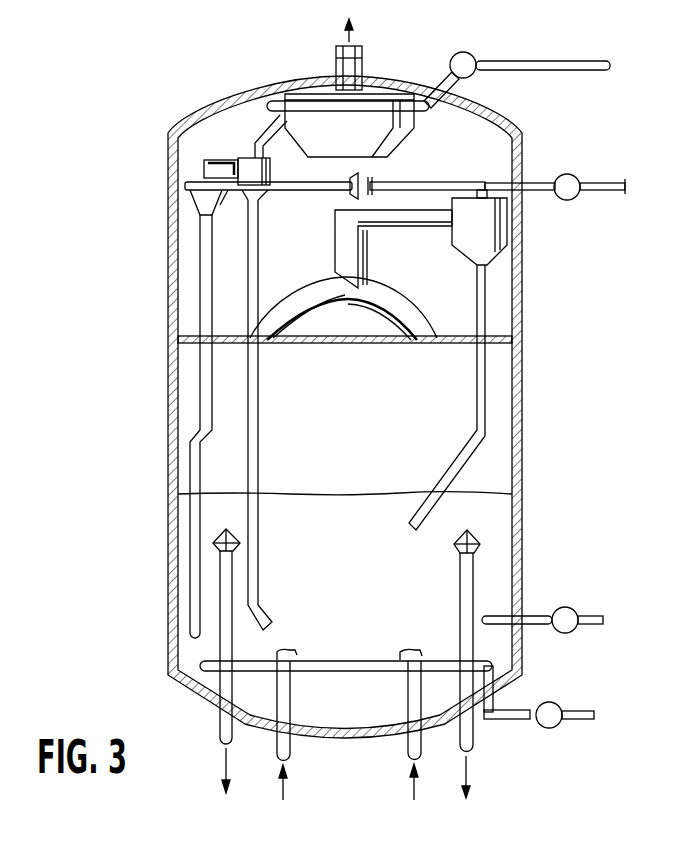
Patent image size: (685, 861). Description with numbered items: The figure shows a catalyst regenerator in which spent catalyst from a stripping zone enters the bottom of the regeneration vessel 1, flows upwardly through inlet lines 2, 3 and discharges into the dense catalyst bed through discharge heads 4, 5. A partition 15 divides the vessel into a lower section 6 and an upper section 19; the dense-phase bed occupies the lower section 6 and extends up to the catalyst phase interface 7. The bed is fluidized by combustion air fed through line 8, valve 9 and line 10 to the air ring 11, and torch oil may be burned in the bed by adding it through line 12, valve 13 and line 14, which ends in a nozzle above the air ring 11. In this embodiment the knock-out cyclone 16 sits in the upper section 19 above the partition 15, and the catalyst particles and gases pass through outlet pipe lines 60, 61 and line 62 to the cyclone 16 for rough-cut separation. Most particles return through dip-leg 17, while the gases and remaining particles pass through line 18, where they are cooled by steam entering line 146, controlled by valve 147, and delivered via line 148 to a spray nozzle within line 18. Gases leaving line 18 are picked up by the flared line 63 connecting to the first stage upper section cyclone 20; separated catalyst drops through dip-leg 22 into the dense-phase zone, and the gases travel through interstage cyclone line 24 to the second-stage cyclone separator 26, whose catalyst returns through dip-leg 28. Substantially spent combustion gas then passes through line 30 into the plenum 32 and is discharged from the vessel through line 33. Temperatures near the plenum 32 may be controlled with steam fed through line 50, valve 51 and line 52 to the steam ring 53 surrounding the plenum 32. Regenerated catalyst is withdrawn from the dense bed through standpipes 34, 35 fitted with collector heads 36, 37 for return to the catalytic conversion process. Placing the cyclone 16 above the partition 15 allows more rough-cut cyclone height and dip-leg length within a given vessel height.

The regeneration vessel 1 is at (162, 240).
The inlet line 2 is at (278, 696).
The inlet line 3 is at (408, 696).
The discharge head 4 is at (290, 654).
The discharge head 5 is at (402, 654).
The lower section 6 is at (403, 593).
The catalyst phase interface 7 is at (370, 492).
The line 8 is at (585, 711).
The valve 9 is at (552, 702).
The line 10 is at (494, 686).
The air ring 11 is at (350, 660).
The line 12 is at (598, 616).
The valve 13 is at (566, 607).
The line 14 is at (500, 616).
The partition 15 is at (376, 345).
The knock-out cyclone 16 is at (470, 250).
The dip-leg 17 is at (476, 410).
The cyclone line 18 is at (428, 182).
The upper section 19 is at (447, 271).
The first stage upper section cyclone 20 is at (219, 200).
The dip-leg 22 is at (213, 280).
The interstage cyclone line 24 is at (224, 161).
The second-stage cyclone separator 26 is at (271, 174).
The dip-leg 28 is at (259, 278).
The line 30 is at (260, 138).
The plenum 32 is at (336, 154).
The line 33 is at (334, 55).
The standpipe 34 is at (220, 690).
The standpipe 35 is at (459, 696).
The collector head 36 is at (226, 528).
The collector head 37 is at (473, 540).
The line 50 is at (515, 68).
The valve 51 is at (462, 53).
The line 52 is at (445, 84).
The steam ring 53 is at (384, 101).
The outlet pipe line 60 is at (250, 344).
The outlet pipe line 61 is at (434, 344).
The line 62 is at (338, 240).
The flared line 63 is at (318, 190).
The line 146 is at (607, 183).
The valve 147 is at (568, 174).
The line 148 is at (504, 183).